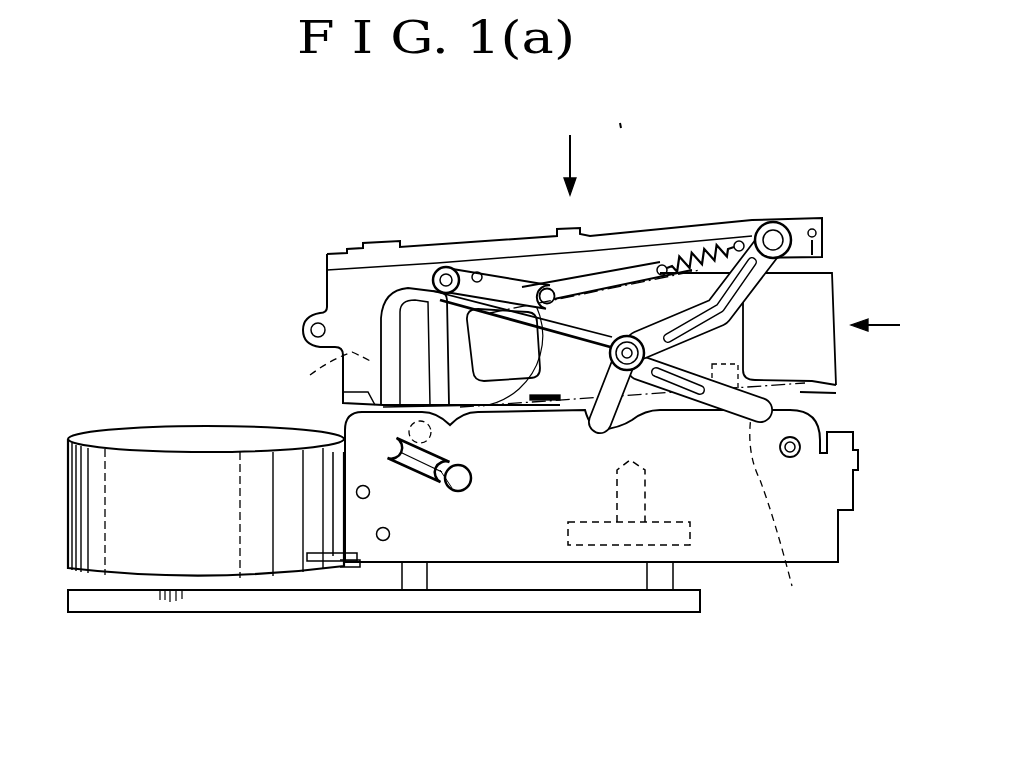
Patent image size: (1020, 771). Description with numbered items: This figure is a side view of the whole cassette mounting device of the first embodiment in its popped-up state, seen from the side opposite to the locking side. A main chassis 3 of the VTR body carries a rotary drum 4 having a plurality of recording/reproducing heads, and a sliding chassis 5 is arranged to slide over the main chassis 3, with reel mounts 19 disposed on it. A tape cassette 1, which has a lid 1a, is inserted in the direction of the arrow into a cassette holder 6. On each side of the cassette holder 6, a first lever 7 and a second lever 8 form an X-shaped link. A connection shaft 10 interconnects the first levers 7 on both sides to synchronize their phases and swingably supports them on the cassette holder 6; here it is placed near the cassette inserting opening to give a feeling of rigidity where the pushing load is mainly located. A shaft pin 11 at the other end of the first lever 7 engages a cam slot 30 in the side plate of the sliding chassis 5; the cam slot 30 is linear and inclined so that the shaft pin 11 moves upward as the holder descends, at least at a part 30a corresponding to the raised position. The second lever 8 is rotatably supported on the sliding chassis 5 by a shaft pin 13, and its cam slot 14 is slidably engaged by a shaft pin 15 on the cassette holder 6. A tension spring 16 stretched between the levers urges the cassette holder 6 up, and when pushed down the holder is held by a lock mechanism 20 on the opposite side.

The tape cassette 1 is at (840, 330).
The lid 1a is at (326, 376).
The main chassis 3 is at (212, 606).
The rotary drum 4 is at (180, 442).
The sliding chassis 5 is at (528, 556).
The cassette holder 6 is at (627, 249).
The first lever 7 is at (745, 318).
The second lever 8 is at (517, 303).
The connection shaft 10 is at (773, 232).
The shaft pin 11 is at (458, 490).
The shaft pin 13 is at (792, 458).
The cam slot 14 is at (477, 273).
The shaft pin 15 is at (447, 273).
The tension spring 16 is at (693, 250).
The reel mount 19 is at (690, 546).
The lock mechanism 20 is at (781, 517).
The cam slot 30 is at (415, 468).
The part of cam slot 30a is at (447, 486).